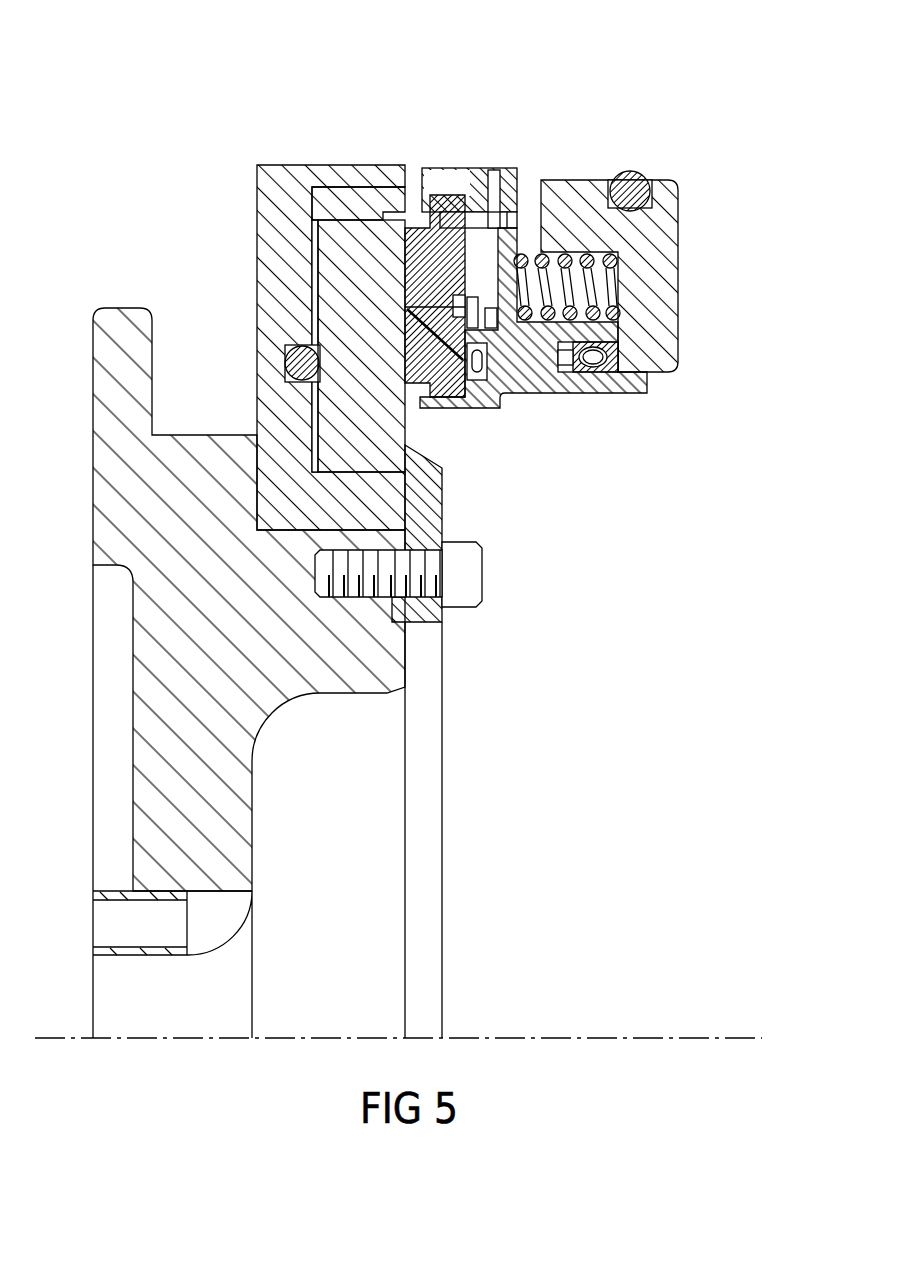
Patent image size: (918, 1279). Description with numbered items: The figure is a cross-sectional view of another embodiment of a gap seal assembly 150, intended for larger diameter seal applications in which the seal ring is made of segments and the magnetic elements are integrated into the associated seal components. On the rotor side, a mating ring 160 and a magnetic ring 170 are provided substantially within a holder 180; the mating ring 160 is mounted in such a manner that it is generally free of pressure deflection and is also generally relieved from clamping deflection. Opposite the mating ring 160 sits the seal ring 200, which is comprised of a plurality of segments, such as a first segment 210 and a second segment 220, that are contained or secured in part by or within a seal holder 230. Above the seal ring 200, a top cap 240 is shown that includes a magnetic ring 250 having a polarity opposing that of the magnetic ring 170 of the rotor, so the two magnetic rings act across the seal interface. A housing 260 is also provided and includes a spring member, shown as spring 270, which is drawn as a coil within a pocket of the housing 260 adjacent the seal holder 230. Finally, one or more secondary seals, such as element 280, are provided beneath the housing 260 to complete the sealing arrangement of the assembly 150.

The gap seal assembly 150 is at (538, 92).
The mating ring 160 is at (348, 272).
The magnetic ring 170 is at (353, 187).
The holder 180 is at (277, 222).
The seal ring 200 is at (413, 400).
The first segment 210 is at (441, 386).
The second segment 220 is at (440, 383).
The seal holder 230 is at (525, 378).
The top cap 240 is at (453, 168).
The magnetic ring 250 is at (510, 170).
The housing 260 is at (656, 226).
The spring 270 is at (572, 293).
The secondary seal 280 is at (590, 352).